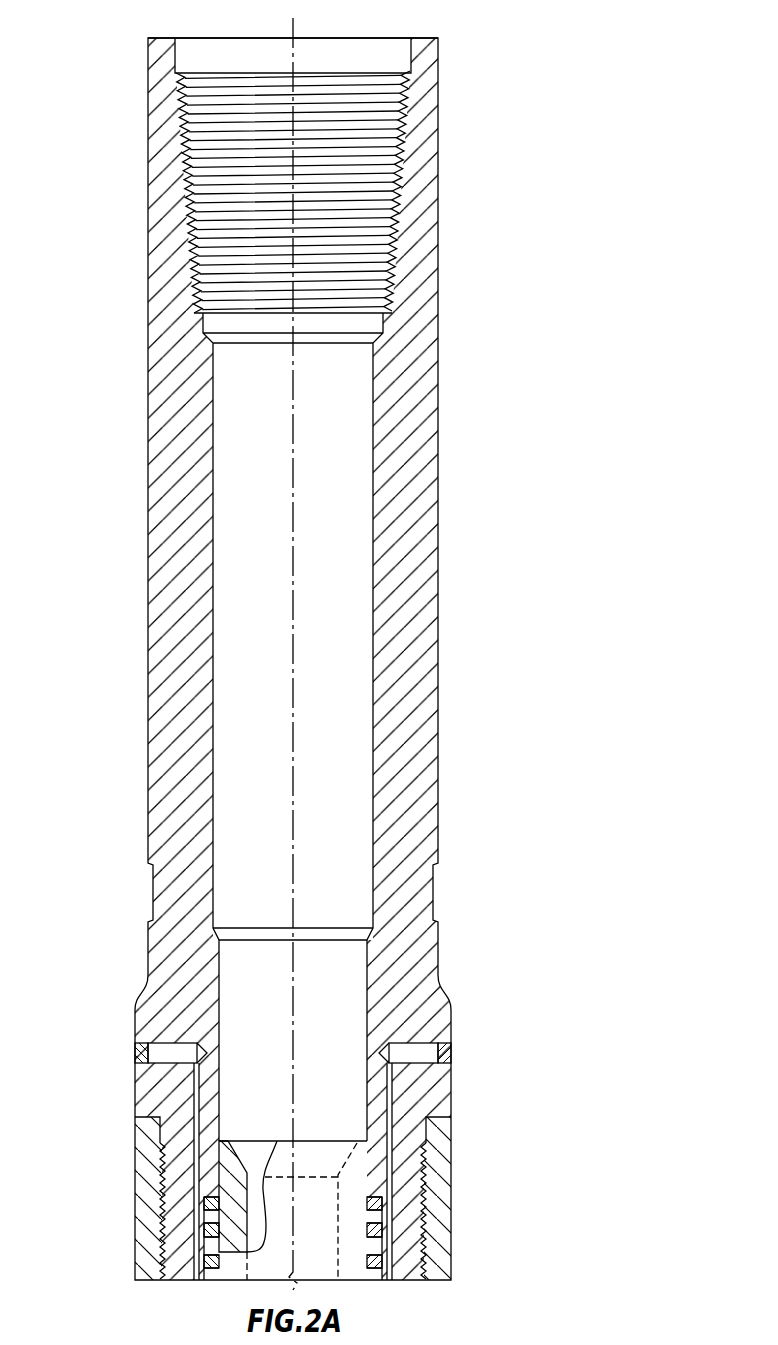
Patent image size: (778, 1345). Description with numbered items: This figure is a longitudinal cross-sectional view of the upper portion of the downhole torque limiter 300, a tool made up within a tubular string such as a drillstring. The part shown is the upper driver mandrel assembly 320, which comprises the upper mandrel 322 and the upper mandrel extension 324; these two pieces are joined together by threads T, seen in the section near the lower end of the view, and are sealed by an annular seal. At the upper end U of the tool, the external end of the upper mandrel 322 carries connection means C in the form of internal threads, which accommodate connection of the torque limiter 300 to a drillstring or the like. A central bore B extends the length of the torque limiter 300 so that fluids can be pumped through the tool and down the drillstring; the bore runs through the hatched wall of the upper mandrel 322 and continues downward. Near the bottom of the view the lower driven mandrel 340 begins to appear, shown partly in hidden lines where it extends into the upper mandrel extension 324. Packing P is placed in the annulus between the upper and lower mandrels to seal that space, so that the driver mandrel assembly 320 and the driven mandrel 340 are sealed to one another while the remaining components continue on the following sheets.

The torque limiter 300 is at (543, 103).
The upper driver mandrel assembly 320 is at (440, 233).
The upper mandrel 322 is at (405, 494).
The upper mandrel extension 324 is at (447, 1200).
The lower driven mandrel 340 is at (318, 1198).
The upper end U is at (133, 88).
The connection means C is at (402, 84).
The threads T is at (427, 1236).
The central bore B is at (255, 1190).
The packing P is at (203, 1222).